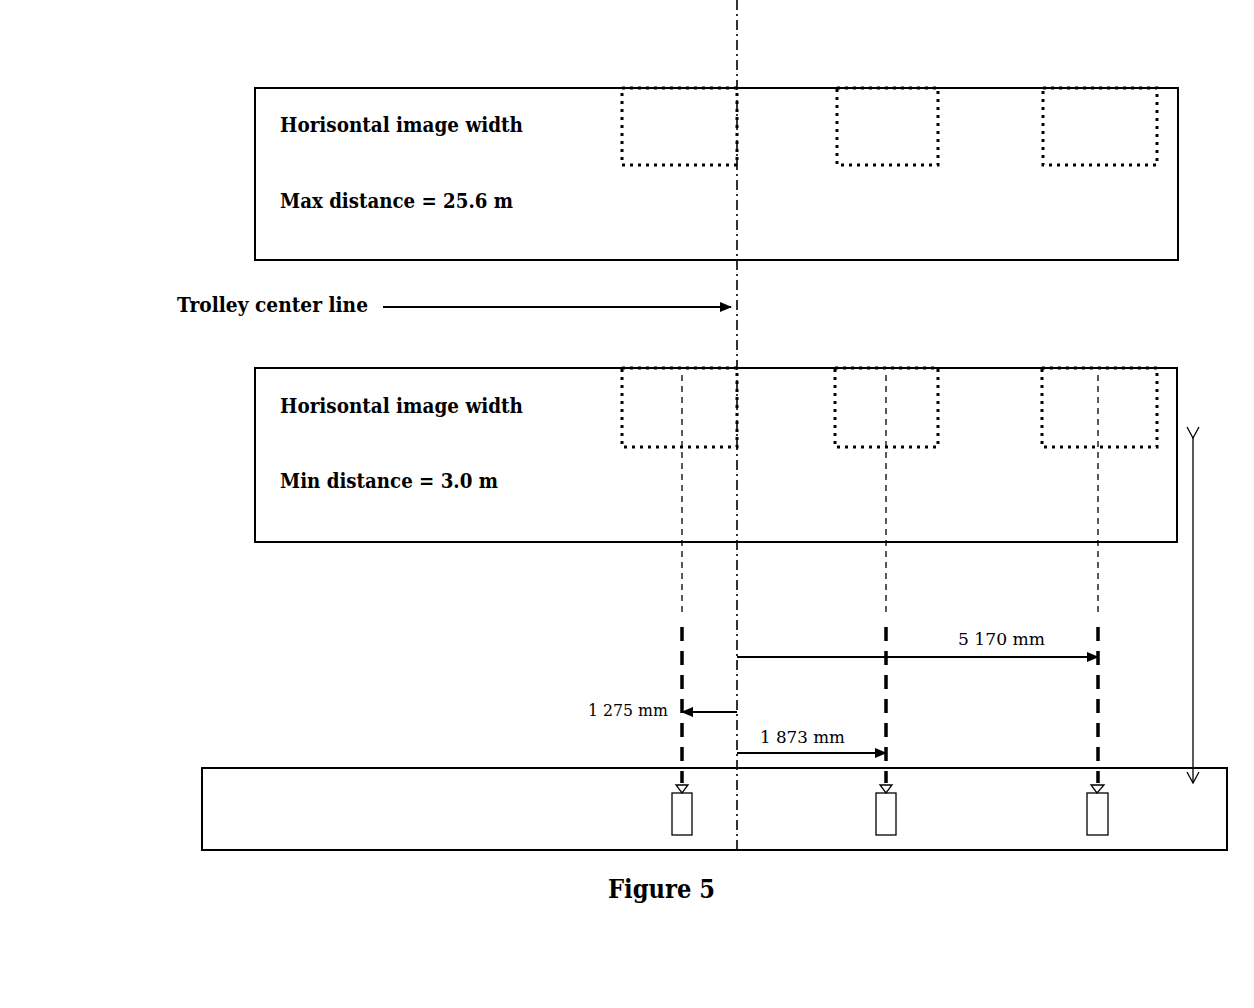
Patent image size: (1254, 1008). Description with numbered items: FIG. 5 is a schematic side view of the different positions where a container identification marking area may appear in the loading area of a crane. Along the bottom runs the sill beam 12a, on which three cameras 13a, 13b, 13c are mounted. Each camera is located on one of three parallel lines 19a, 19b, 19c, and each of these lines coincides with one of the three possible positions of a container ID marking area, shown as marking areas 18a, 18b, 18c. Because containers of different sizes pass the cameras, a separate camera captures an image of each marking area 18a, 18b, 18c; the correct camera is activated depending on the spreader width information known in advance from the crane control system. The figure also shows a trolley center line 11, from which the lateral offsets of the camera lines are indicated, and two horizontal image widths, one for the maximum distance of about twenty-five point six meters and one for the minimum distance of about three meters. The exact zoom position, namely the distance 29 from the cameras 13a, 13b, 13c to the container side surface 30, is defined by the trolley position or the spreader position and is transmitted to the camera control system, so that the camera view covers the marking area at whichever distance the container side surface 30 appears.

The trolley center line 11 is at (736, 58).
The sill beam 12a is at (370, 822).
The camera 13a is at (672, 820).
The camera 13b is at (876, 825).
The camera 13c is at (1087, 825).
The marking area 18a is at (667, 110).
The marking area 18b is at (895, 108).
The marking area 18c is at (1110, 106).
The parallel line 19a is at (682, 610).
The parallel line 19b is at (886, 615).
The parallel line 19c is at (1098, 608).
The distance 29 is at (1212, 610).
The container side surface 30 is at (968, 476).